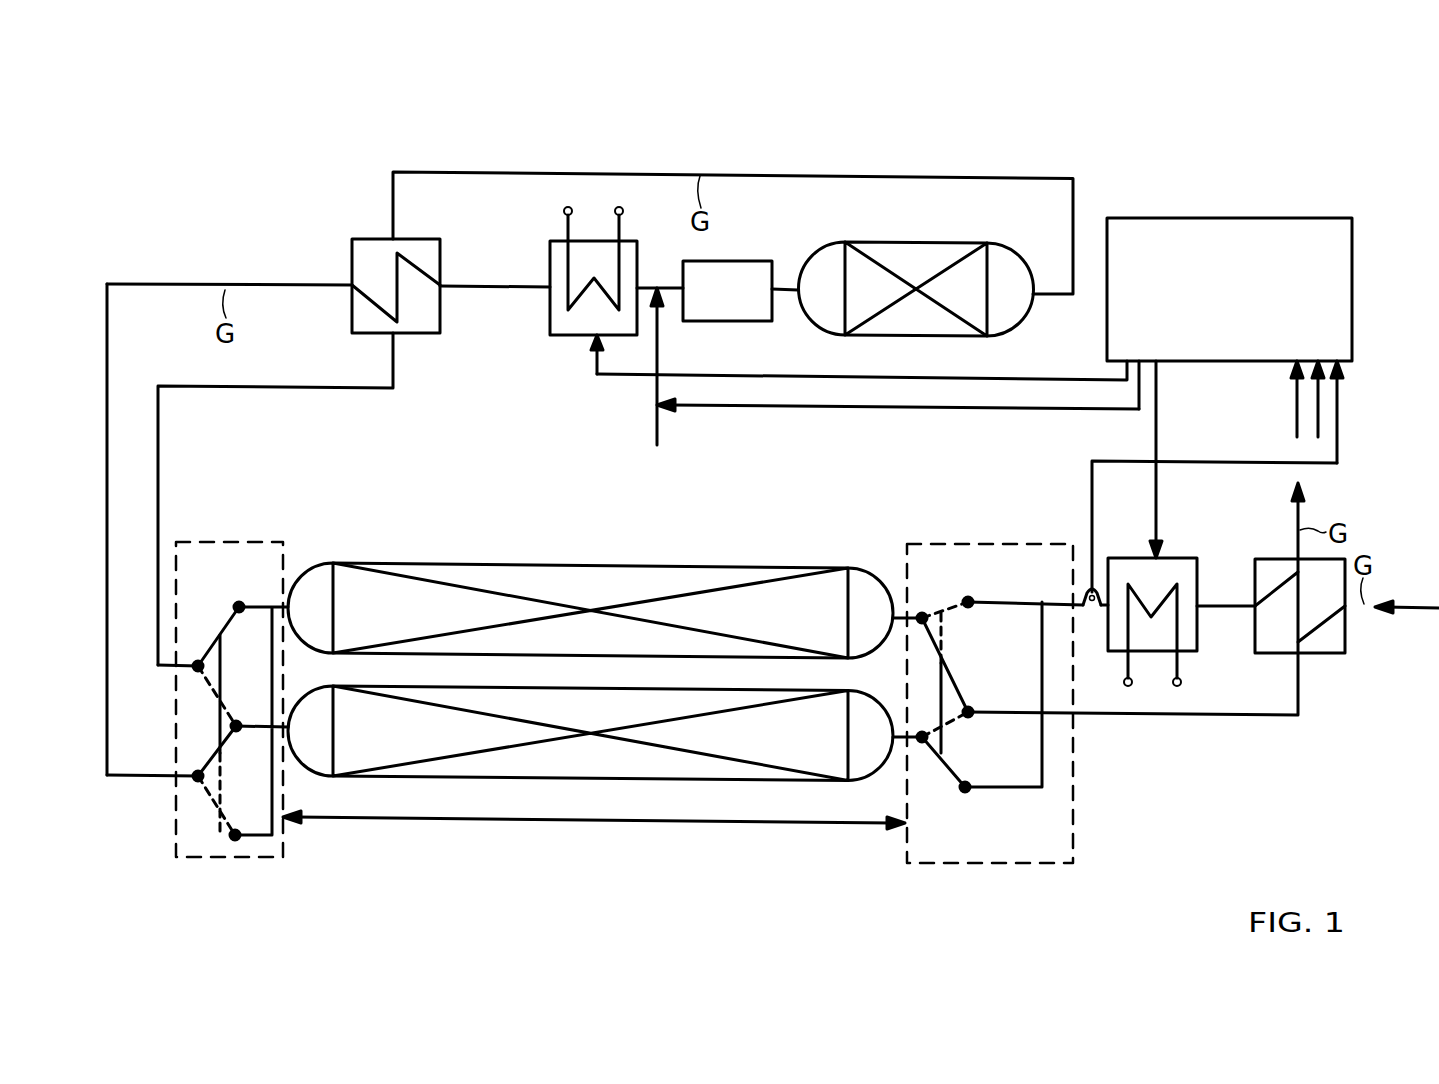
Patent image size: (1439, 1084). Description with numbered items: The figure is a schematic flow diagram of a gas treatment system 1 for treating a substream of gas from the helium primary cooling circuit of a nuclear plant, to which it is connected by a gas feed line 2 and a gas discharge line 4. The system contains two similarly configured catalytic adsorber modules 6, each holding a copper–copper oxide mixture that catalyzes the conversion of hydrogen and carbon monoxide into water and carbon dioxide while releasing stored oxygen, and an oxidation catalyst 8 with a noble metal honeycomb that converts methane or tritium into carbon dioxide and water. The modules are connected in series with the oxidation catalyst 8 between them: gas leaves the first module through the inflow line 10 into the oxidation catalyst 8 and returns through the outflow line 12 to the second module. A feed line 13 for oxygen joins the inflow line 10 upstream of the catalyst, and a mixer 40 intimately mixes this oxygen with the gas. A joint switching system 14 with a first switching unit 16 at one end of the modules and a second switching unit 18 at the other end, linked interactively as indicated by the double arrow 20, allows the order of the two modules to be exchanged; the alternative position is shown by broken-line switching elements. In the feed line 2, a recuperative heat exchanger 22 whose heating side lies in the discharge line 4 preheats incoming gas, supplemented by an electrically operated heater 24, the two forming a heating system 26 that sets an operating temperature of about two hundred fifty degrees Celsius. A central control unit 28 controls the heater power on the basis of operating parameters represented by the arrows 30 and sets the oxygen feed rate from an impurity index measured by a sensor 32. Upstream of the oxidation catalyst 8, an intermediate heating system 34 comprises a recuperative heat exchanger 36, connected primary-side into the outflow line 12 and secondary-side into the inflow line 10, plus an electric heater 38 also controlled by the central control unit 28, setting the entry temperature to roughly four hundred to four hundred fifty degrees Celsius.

The gas treatment system 1 is at (248, 183).
The gas feed line 2 is at (1415, 612).
The gas discharge line 4 is at (1297, 522).
The catalytic adsorber module 6 is at (507, 582).
The oxidation catalyst 8 is at (910, 255).
The inflow line 10 is at (172, 284).
The outflow line 12 is at (805, 172).
The feed line for oxygen 13 is at (660, 352).
The switching system 14 is at (826, 901).
The first switching unit 16 is at (1073, 805).
The second switching unit 18 is at (283, 822).
The double arrow 20 is at (707, 826).
The recuperative heat exchanger 22 is at (1347, 655).
The electrically operated heater 24 is at (1200, 652).
The heating system 26 is at (1237, 803).
The central control unit 28 is at (1207, 232).
The arrows 30 is at (1318, 410).
The sensor 32 is at (1095, 590).
The intermediate heating system 34 is at (508, 371).
The recuperative heat exchanger 36 is at (428, 335).
The electric heater 38 is at (565, 337).
The mixer 40 is at (757, 260).